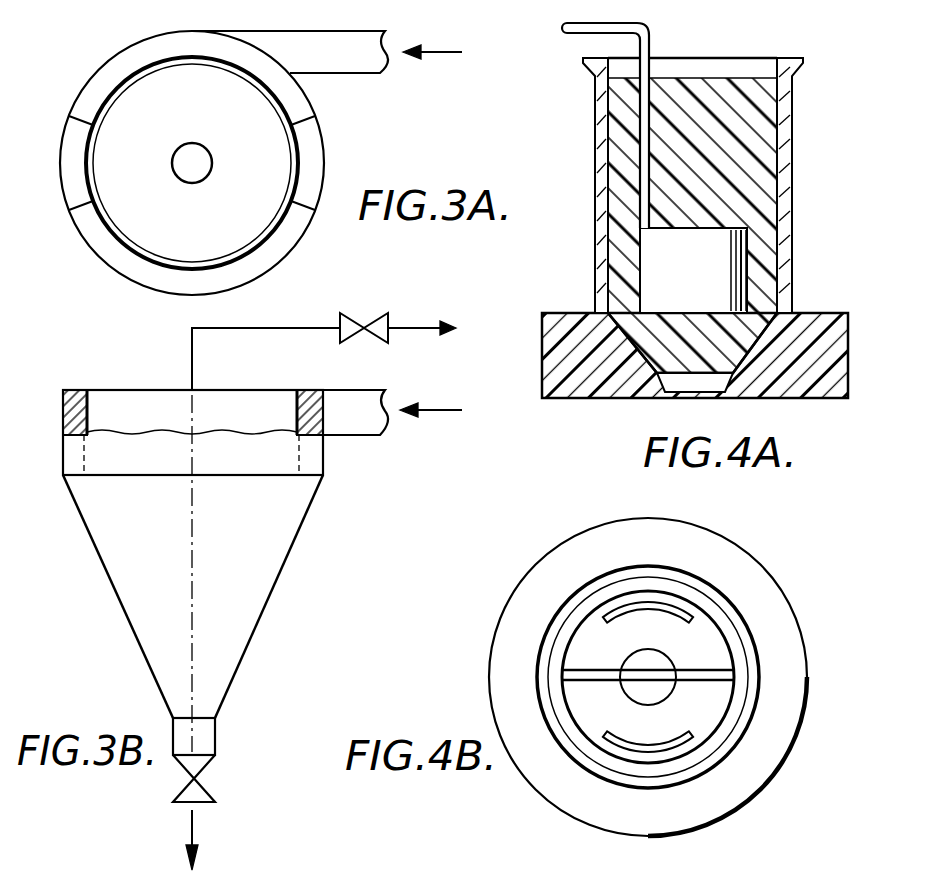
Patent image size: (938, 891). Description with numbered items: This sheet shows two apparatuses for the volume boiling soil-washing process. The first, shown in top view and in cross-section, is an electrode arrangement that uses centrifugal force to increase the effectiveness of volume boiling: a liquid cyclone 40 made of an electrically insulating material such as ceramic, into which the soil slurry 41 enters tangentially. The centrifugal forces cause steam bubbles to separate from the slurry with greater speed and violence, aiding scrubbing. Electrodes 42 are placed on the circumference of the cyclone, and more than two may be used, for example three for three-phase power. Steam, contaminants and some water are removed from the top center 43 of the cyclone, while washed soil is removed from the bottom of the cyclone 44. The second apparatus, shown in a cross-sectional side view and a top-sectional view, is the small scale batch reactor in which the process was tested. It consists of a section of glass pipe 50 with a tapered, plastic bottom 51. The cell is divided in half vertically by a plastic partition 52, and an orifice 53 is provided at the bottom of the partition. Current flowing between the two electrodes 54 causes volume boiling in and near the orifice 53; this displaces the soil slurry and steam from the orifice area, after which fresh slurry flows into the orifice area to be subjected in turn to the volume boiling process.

In FIG. 3A, the liquid cyclone 40 is at (133, 258).
In FIG. 3B, the liquid cyclone 40 is at (133, 593).
In FIG. 3A, the soil slurry 41 is at (450, 55).
In FIG. 3B, the soil slurry 41 is at (443, 410).
In FIG. 3A, the electrodes 42 is at (70, 160).
In FIG. 3B, the electrodes 42 is at (80, 388).
In FIG. 3B, the top center 43 is at (192, 358).
In FIG. 3B, the bottom of the cyclone 44 is at (192, 827).
In FIG. 4A, the glass pipe 50 is at (597, 107).
In FIG. 4B, the glass pipe 50 is at (588, 752).
In FIG. 4A, the tapered, plastic bottom 51 is at (580, 392).
In FIG. 4B, the tapered, plastic bottom 51 is at (562, 542).
In FIG. 4A, the plastic partition 52 is at (620, 163).
In FIG. 4B, the plastic partition 52 is at (595, 665).
In FIG. 4A, the orifice 53 is at (690, 382).
In FIG. 4A, the electrodes 54 is at (665, 277).
In FIG. 4B, the electrodes 54 is at (672, 608).